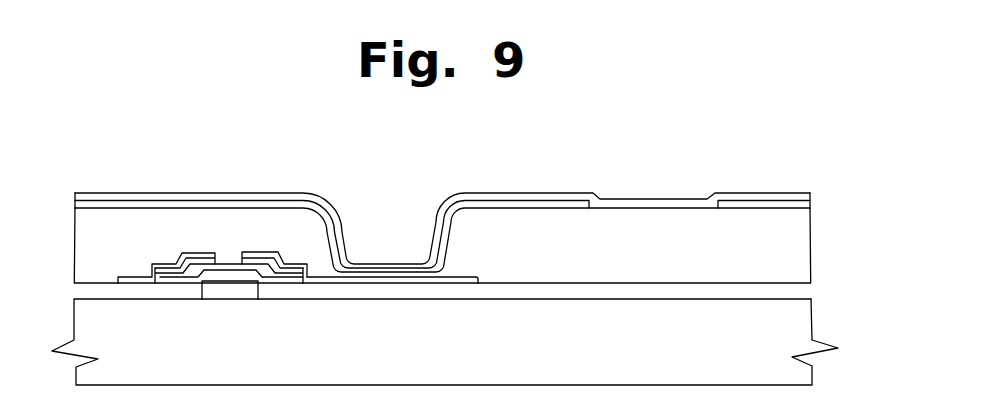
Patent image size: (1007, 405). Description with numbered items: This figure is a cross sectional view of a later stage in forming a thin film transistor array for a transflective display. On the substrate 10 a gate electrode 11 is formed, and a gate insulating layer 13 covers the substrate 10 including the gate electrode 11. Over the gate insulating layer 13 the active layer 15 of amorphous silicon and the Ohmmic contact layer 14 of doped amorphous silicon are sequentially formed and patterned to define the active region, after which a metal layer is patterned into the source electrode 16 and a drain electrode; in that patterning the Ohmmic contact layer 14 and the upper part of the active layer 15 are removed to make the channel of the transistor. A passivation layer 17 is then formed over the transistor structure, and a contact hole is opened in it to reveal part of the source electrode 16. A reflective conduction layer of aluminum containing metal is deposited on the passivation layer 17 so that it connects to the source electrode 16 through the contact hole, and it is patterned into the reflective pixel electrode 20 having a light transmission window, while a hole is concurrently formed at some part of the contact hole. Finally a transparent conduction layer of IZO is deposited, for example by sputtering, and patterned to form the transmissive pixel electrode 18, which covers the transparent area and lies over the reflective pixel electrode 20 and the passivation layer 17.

The substrate 10 is at (793, 323).
The gate electrode 11 is at (230, 287).
The gate insulating layer 13 is at (793, 288).
The Ohmmic contact layer 14 is at (169, 276).
The active layer 15 is at (290, 280).
The source electrode 16 is at (393, 277).
The passivation layer 17 is at (793, 246).
The transmissive pixel electrode 18 is at (810, 194).
The reflective pixel electrode 20 is at (810, 202).